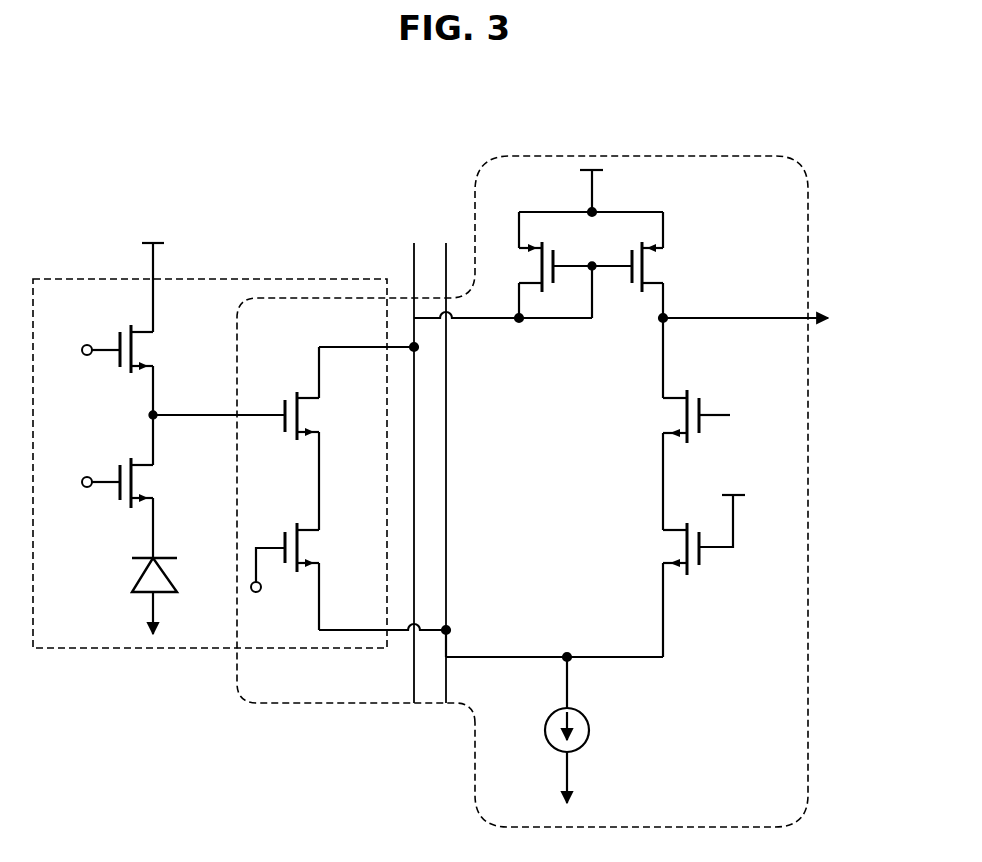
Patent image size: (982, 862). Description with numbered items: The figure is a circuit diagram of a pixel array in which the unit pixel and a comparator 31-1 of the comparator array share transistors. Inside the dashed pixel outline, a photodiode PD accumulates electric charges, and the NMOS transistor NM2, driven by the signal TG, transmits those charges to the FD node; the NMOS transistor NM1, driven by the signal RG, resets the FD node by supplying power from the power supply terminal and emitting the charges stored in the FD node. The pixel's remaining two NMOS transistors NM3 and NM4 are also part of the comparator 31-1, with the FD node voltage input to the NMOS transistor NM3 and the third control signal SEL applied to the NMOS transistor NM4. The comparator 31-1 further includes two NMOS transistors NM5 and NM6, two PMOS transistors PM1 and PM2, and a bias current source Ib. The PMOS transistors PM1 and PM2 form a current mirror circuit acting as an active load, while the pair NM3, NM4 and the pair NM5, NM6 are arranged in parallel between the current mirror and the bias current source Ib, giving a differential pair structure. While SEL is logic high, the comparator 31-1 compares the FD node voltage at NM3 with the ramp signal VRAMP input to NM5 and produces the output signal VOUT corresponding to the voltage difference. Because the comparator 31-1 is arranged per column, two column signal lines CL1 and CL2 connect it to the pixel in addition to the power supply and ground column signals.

The comparator 31-1 is at (653, 154).
The NMOS transistor NM1 is at (161, 349).
The NMOS transistor NM2 is at (161, 483).
The NMOS transistor NM3 is at (326, 416).
The NMOS transistor NM4 is at (326, 547).
The NMOS transistor NM5 is at (658, 416).
The NMOS transistor NM6 is at (681, 535).
The PMOS transistor PM1 is at (542, 267).
The PMOS transistor PM2 is at (650, 267).
The photodiode PD is at (133, 575).
The FD node FD is at (197, 415).
The reset gate signal RG is at (81, 350).
The transfer gate signal TG is at (81, 482).
The third control signal SEL is at (264, 586).
The column signal line CL1 is at (446, 682).
The column signal line CL2 is at (414, 682).
The output signal VOUT is at (777, 319).
The ramp signal VRAMP is at (748, 416).
The bias current source Ib is at (582, 730).